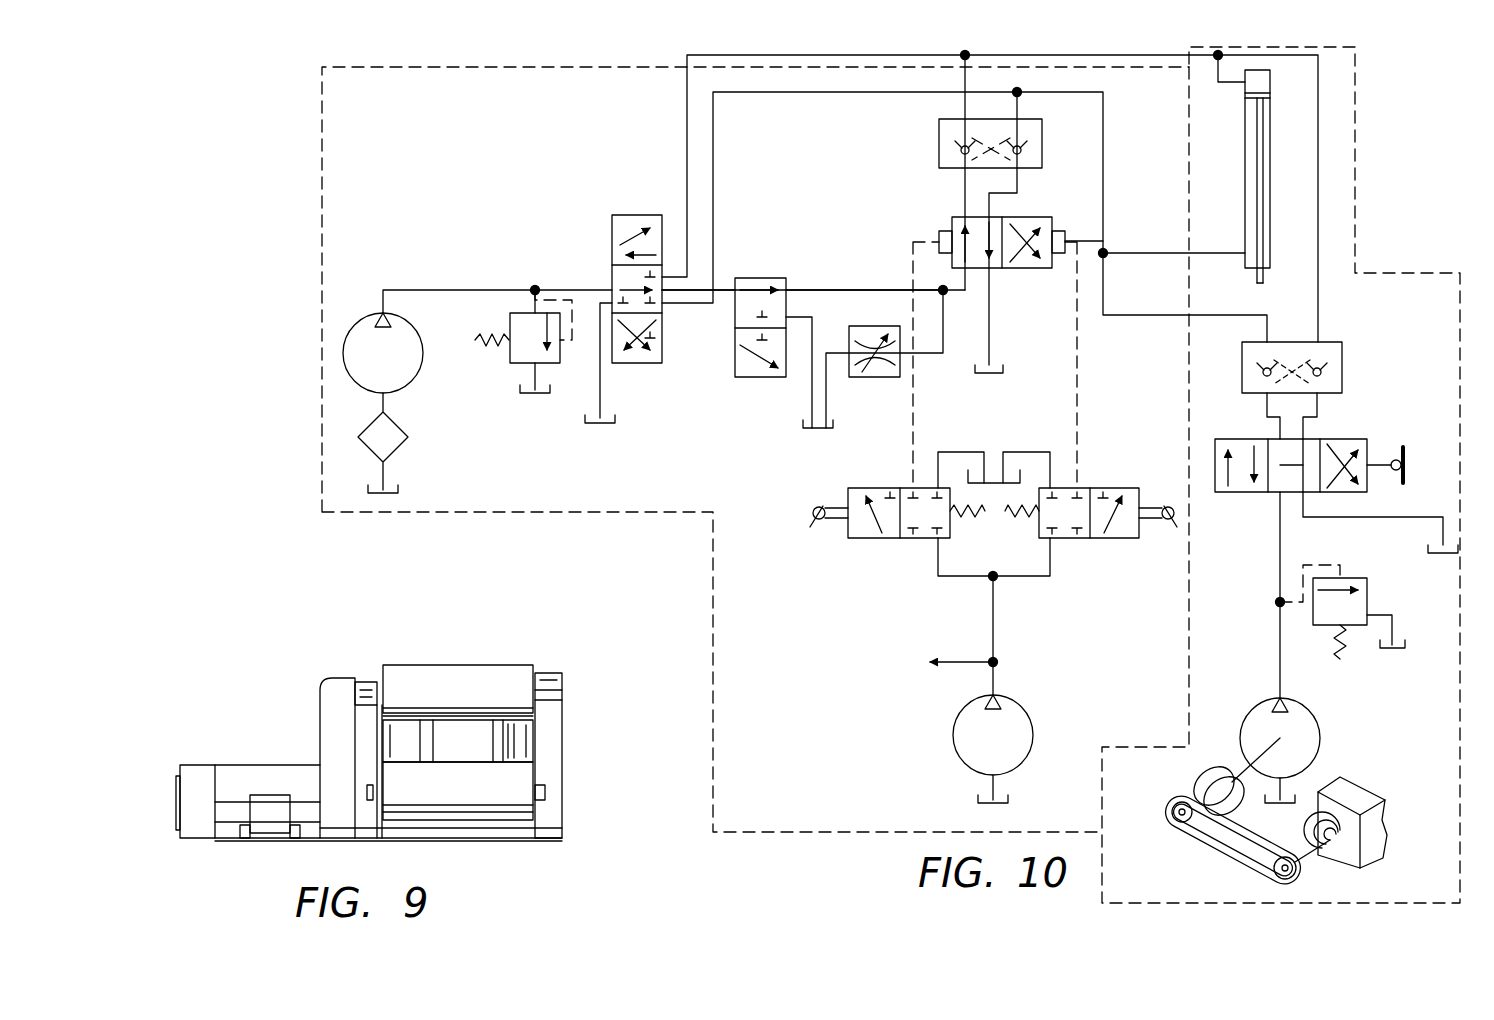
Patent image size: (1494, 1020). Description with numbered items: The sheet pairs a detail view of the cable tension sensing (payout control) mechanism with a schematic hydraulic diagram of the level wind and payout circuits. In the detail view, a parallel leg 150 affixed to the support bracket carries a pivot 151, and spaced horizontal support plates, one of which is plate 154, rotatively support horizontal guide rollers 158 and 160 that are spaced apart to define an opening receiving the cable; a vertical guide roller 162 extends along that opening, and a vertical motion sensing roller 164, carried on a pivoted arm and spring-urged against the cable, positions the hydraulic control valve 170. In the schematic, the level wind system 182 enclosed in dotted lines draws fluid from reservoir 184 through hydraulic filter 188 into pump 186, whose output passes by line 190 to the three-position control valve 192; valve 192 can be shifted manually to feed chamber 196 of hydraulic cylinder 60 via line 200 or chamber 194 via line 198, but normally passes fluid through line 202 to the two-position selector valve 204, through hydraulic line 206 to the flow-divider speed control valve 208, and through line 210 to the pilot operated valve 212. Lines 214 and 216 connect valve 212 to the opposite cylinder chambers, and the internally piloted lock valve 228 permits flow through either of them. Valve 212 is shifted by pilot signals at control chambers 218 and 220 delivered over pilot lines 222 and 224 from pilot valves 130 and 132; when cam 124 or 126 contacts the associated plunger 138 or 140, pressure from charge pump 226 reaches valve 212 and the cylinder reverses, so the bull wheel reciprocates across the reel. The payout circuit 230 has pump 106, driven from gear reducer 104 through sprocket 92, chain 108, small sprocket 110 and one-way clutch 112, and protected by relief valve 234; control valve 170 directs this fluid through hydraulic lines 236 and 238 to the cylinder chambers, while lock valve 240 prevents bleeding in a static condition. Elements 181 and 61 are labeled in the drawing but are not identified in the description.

In FIG. 10, the level wind control system 182 is at (576, 125).
In FIG. 10, the line 198 is at (687, 165).
In FIG. 10, the line 200 is at (713, 170).
In FIG. 10, the control valve 192 is at (612, 220).
In FIG. 10, the line 190 is at (452, 290).
In FIG. 10, the pump 186 is at (413, 378).
In FIG. 10, the relief valve 181 is at (535, 403).
In FIG. 10, the hydraulic filter 188 is at (400, 450).
In FIG. 10, the reservoir 184 is at (398, 493).
In FIG. 10, the line 202 is at (720, 290).
In FIG. 10, the selector valve 204 is at (766, 278).
In FIG. 10, the hydraulic line 206 is at (857, 290).
In FIG. 10, the speed control valve 208 is at (883, 378).
In FIG. 10, the line 210 is at (947, 295).
In FIG. 10, the pilot line 222 is at (915, 420).
In FIG. 10, the pilot line 224 is at (1075, 354).
In FIG. 10, the line 214 is at (963, 186).
In FIG. 10, the line 216 is at (1017, 186).
In FIG. 10, the control chamber 218 is at (940, 232).
In FIG. 10, the pilot operated valve 212 is at (1040, 215).
In FIG. 10, the control chamber 220 is at (1103, 237).
In FIG. 10, the lock valve 228 is at (1042, 136).
In FIG. 10, the hydraulic line 236 is at (1222, 58).
In FIG. 10, the cylinder chamber 194 is at (1262, 95).
In FIG. 10, the cylinder chamber 196 is at (1263, 172).
In FIG. 10, the yoke cylinder 60 is at (1271, 216).
In FIG. 10, the rod end 61 is at (1263, 279).
In FIG. 10, the payout circuit 230 is at (1356, 140).
In FIG. 10, the hydraulic line 238 is at (1108, 258).
In FIG. 10, the lock valve 240 is at (1342, 366).
In FIG. 10, the hydraulic control valve 170 is at (1350, 444).
In FIG. 9, the hydraulic control valve 170 is at (270, 810).
In FIG. 10, the cam 124 is at (817, 507).
In FIG. 10, the plunger 138 is at (830, 525).
In FIG. 10, the pilot valve 130 is at (903, 540).
In FIG. 10, the pilot valve 132 is at (1092, 540).
In FIG. 10, the plunger 140 is at (1157, 507).
In FIG. 10, the cam 126 is at (1173, 522).
In FIG. 10, the charge pump 226 is at (1032, 752).
In FIG. 10, the relief valve 234 is at (1367, 599).
In FIG. 10, the one-way clutch 112 is at (1213, 769).
In FIG. 10, the hydraulic charging pump 106 is at (1306, 753).
In FIG. 10, the gear reducer 104 is at (1383, 821).
In FIG. 10, the small sprocket 110 is at (1178, 822).
In FIG. 10, the chain 108 is at (1228, 858).
In FIG. 10, the outer sprocket 92 is at (1278, 876).
In FIG. 9, the vertical motion sensing roller 164 is at (412, 745).
In FIG. 9, the horizontal guide roller 158 is at (472, 678).
In FIG. 9, the horizontal support plate 154 is at (325, 718).
In FIG. 9, the parallel leg 150 is at (196, 775).
In FIG. 9, the pivot 151 is at (176, 790).
In FIG. 9, the vertical guide roller 162 is at (516, 739).
In FIG. 9, the horizontal guide roller 160 is at (466, 785).